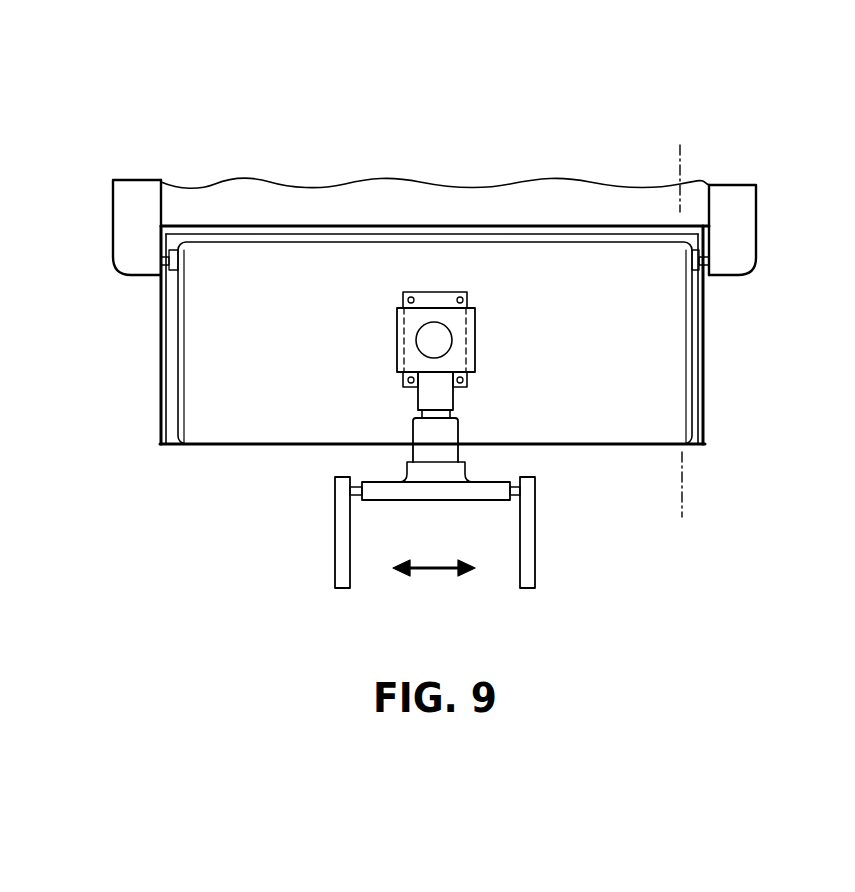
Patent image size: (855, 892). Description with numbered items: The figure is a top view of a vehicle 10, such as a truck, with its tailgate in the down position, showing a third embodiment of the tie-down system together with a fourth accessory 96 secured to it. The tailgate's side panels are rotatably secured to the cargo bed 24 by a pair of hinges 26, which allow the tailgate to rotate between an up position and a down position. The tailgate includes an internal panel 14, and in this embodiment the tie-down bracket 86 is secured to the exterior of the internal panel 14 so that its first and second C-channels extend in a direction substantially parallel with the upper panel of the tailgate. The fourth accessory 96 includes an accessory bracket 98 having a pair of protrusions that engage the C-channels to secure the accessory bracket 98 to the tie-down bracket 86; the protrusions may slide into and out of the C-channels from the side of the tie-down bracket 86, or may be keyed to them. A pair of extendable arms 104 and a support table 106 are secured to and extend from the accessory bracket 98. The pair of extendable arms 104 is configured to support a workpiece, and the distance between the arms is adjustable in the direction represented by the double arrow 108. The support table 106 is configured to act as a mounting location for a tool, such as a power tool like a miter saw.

The vehicle 10 is at (680, 145).
The internal panel 14 is at (646, 422).
The cargo bed 24 is at (756, 228).
The hinges 26 is at (158, 262).
The tie-down bracket 86 is at (475, 343).
The fourth accessory 96 is at (436, 563).
The accessory bracket 98 is at (475, 360).
The extendable arms 104 is at (335, 537).
The support table 106 is at (413, 435).
The double arrow 108 is at (418, 548).